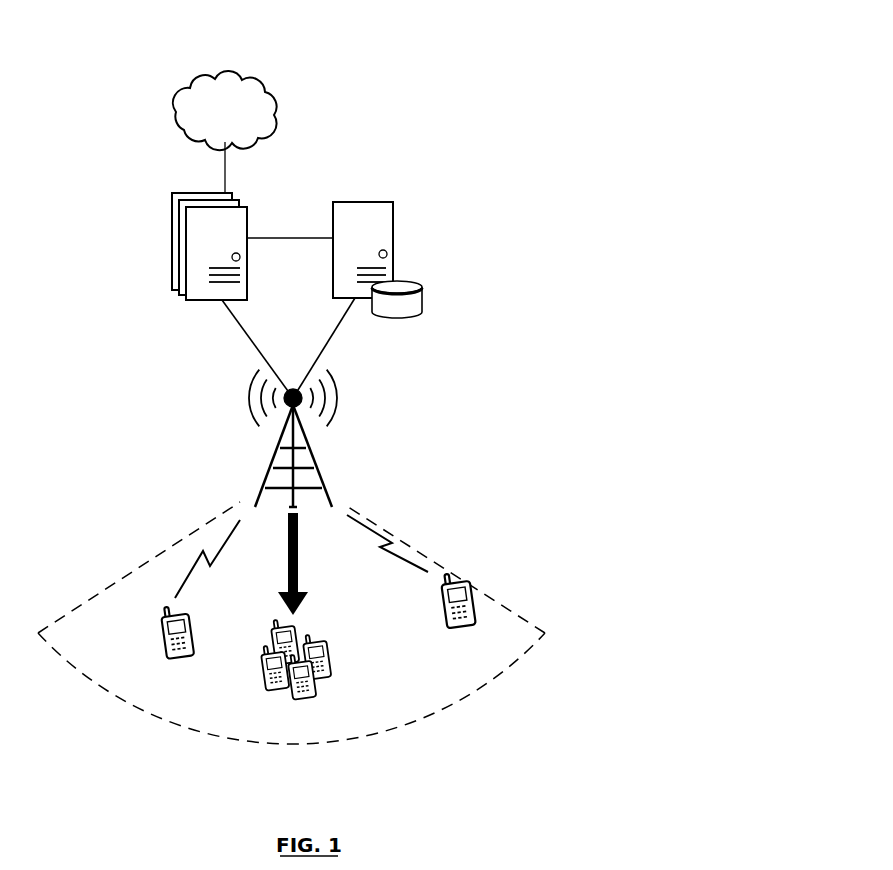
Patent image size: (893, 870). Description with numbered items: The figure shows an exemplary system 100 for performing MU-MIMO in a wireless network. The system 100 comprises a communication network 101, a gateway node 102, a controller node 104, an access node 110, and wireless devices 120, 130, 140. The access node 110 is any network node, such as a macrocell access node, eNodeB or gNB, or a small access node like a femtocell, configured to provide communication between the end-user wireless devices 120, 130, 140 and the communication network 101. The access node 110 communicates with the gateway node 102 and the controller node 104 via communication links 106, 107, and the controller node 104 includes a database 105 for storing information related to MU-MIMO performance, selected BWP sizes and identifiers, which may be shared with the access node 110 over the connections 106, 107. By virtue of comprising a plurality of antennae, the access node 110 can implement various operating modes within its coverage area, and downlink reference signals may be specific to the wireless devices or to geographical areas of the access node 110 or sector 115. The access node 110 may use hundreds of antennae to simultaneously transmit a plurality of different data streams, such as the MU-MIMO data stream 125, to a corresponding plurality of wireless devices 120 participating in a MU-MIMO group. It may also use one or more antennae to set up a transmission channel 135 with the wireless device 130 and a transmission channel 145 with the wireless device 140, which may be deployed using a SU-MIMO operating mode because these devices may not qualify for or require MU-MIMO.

The system 100 is at (408, 58).
The communication network 101 is at (211, 121).
The gateway node 102 is at (190, 193).
The controller node 104 is at (393, 202).
The database 105 is at (422, 287).
The communication link 106 is at (333, 333).
The communication link 107 is at (241, 327).
The access node 110 is at (273, 475).
The sector 115 is at (500, 675).
The wireless devices 120 is at (335, 693).
The MU-MIMO data stream 125 is at (300, 600).
The wireless device 130 is at (157, 632).
The transmission channel 135 is at (200, 552).
The wireless device 140 is at (462, 590).
The transmission channel 145 is at (395, 538).